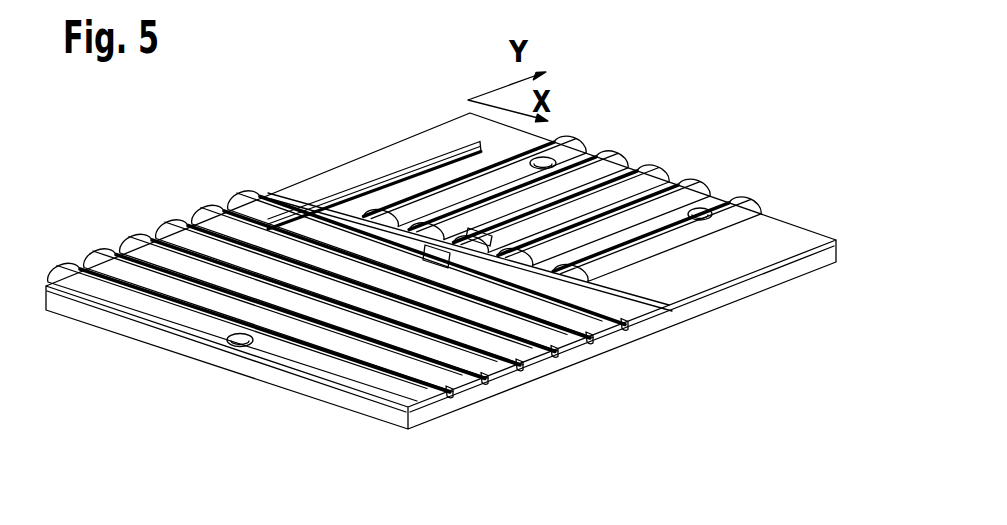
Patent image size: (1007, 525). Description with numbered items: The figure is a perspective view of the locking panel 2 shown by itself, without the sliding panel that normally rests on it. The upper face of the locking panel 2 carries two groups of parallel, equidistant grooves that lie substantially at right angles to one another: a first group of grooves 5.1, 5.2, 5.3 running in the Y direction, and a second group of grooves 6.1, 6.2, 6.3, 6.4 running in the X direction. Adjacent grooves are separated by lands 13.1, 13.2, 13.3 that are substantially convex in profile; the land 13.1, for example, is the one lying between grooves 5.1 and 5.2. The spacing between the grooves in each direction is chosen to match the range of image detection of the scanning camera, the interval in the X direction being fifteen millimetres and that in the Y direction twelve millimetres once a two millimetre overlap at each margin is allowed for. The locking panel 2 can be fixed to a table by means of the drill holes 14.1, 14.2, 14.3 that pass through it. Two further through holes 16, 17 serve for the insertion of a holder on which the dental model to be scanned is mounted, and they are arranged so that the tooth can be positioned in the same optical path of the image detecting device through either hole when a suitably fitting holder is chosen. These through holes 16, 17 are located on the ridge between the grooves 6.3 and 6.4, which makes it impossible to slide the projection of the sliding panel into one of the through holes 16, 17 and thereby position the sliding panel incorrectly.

The locking panel 2 is at (787, 238).
The groove 5.1 is at (258, 196).
The groove 5.2 is at (219, 214).
The groove 5.3 is at (185, 230).
The groove 6.1 is at (570, 147).
The groove 6.2 is at (598, 163).
The groove 6.3 is at (638, 172).
The groove 6.4 is at (678, 182).
The land 13.1 is at (613, 333).
The land 13.2 is at (575, 345).
The land 13.3 is at (537, 363).
The drill hole 14.1 is at (240, 347).
The drill hole 14.2 is at (548, 152).
The drill hole 14.3 is at (720, 211).
The through hole 16 is at (490, 238).
The through hole 17 is at (430, 245).